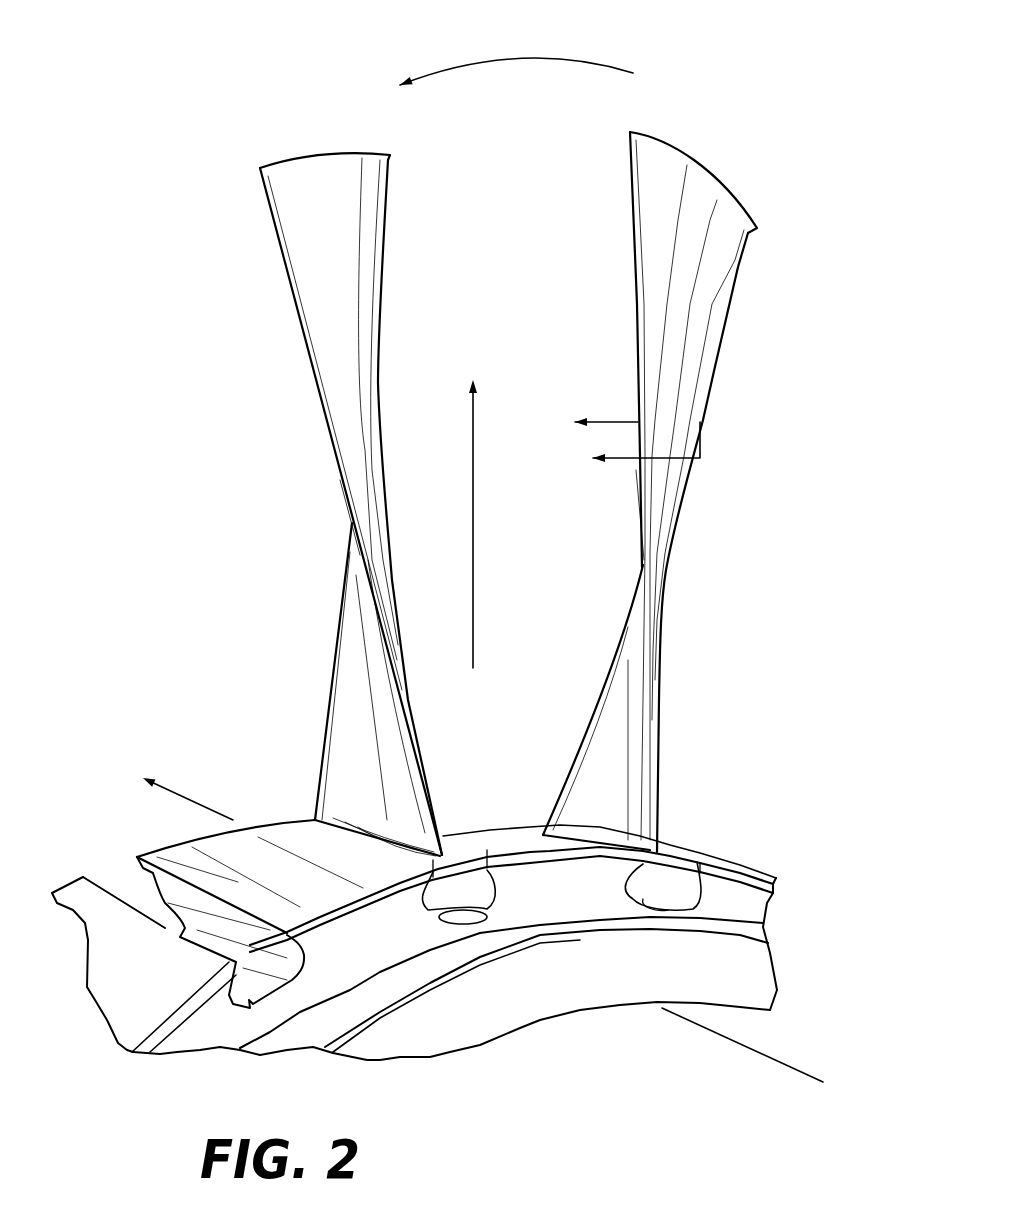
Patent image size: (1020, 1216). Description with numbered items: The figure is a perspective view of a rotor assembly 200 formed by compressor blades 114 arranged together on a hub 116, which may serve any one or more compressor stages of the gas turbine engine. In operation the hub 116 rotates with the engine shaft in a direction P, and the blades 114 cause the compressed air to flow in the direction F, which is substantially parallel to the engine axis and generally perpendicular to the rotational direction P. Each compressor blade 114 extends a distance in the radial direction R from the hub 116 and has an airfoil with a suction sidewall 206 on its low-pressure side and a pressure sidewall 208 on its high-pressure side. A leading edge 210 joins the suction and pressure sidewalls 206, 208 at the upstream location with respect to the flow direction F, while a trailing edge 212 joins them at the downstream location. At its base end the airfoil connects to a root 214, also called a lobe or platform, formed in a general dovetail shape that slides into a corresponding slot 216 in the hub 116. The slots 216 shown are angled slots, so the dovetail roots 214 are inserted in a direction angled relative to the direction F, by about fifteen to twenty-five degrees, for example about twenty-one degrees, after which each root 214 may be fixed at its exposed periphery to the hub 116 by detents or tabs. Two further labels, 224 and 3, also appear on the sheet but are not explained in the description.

The compressor blade 114 is at (272, 153).
The suction sidewall 206 is at (368, 318).
The leading edge 210 is at (349, 497).
The trailing edge 212 is at (340, 645).
The pressure sidewall 208 is at (325, 768).
The platform 224 is at (455, 852).
The root 214 is at (438, 907).
The slot 216 is at (112, 873).
The hub 116 is at (750, 873).
The rotor assembly 200 is at (770, 1030).
The rotational direction P is at (516, 60).
The radial direction R is at (474, 546).
The flow direction F is at (183, 790).
The section line 3- 3 is at (637, 428).